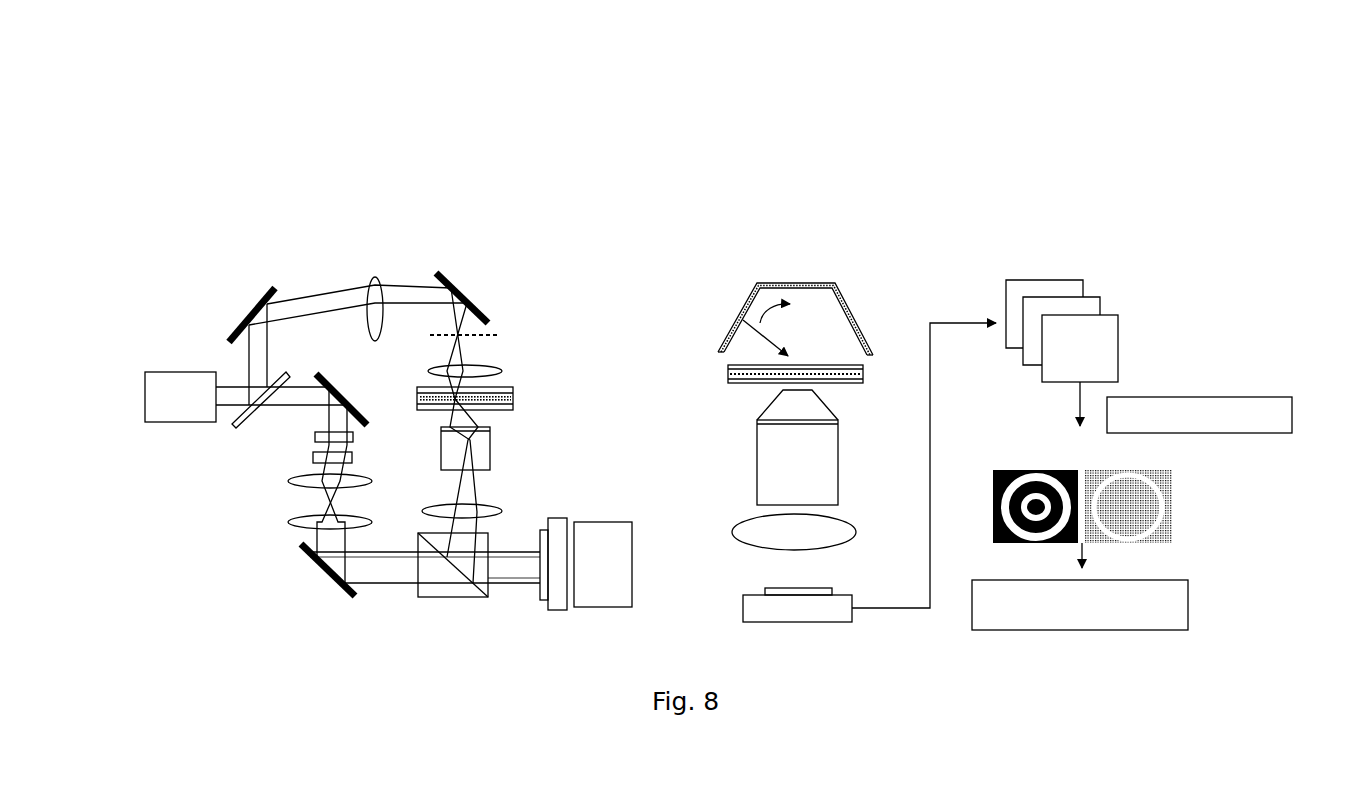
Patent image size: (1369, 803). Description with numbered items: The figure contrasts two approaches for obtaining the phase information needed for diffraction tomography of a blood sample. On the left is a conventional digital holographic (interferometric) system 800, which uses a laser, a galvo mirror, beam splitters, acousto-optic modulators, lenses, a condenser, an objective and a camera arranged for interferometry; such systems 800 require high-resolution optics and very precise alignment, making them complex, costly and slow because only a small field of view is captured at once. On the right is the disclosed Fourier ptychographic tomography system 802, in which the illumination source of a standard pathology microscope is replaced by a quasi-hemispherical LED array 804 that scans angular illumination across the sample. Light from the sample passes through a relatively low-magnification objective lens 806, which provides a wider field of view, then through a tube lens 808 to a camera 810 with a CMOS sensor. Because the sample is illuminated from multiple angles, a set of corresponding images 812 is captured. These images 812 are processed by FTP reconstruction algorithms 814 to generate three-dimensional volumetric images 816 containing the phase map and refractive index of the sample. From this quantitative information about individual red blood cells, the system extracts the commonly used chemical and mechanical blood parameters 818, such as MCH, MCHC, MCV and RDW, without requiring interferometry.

The conventional digital holographic (interferometric) system 800 is at (192, 216).
The Fourier ptychographic tomography (FPT) system 802 is at (656, 216).
The quasi-hemispherical LED array 804 is at (862, 327).
The low-magnification objective lens 806 is at (840, 468).
The tube lens 808 is at (840, 520).
The camera 810 is at (832, 590).
The images 812 is at (1120, 338).
The FTP reconstruction algorithms 814 is at (1293, 415).
The 3D volumetric images 816 is at (1173, 508).
The blood parameters 818 is at (1190, 612).